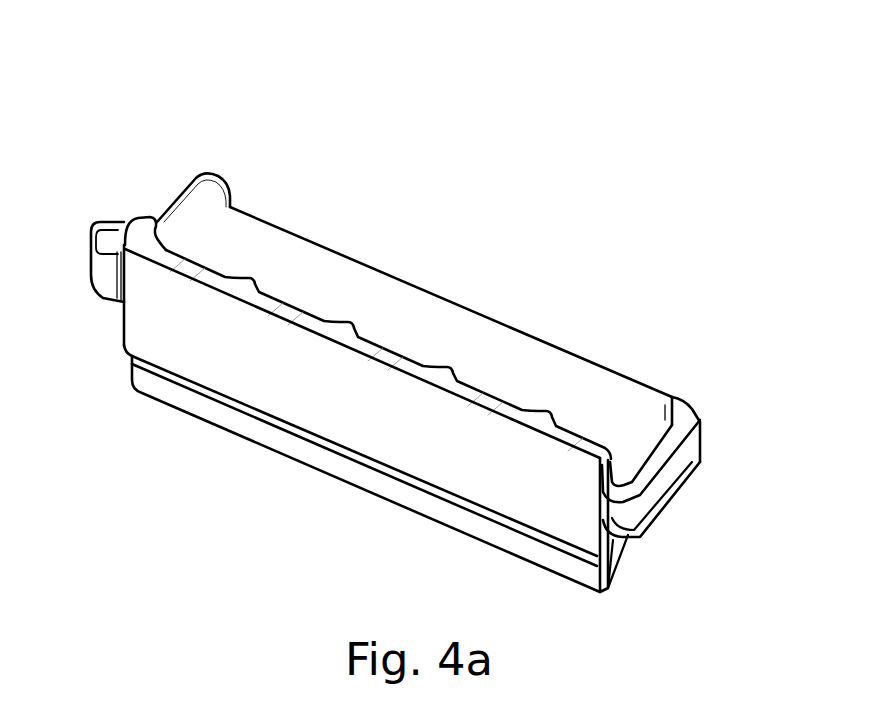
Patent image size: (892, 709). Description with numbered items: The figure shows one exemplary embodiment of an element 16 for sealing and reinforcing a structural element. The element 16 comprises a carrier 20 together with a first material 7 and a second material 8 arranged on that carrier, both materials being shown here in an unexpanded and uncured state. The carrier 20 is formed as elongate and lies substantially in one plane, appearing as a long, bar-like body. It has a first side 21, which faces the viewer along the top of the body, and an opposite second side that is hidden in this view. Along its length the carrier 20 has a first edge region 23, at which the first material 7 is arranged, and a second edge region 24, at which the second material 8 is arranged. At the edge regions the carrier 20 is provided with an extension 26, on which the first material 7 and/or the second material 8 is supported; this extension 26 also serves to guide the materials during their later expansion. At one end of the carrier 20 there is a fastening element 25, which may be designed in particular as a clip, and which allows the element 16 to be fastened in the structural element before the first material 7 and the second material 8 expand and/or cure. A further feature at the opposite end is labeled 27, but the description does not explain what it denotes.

The element 16 is at (201, 78).
The carrier 20 is at (538, 352).
The first side 21 is at (457, 343).
The first edge region 23 is at (388, 360).
The first material 7 is at (415, 458).
The extension 26 is at (243, 407).
The fastening element 25 is at (102, 233).
The second edge region 24 is at (660, 427).
The second material 8 is at (687, 423).
The groove end / recess 27 is at (602, 503).